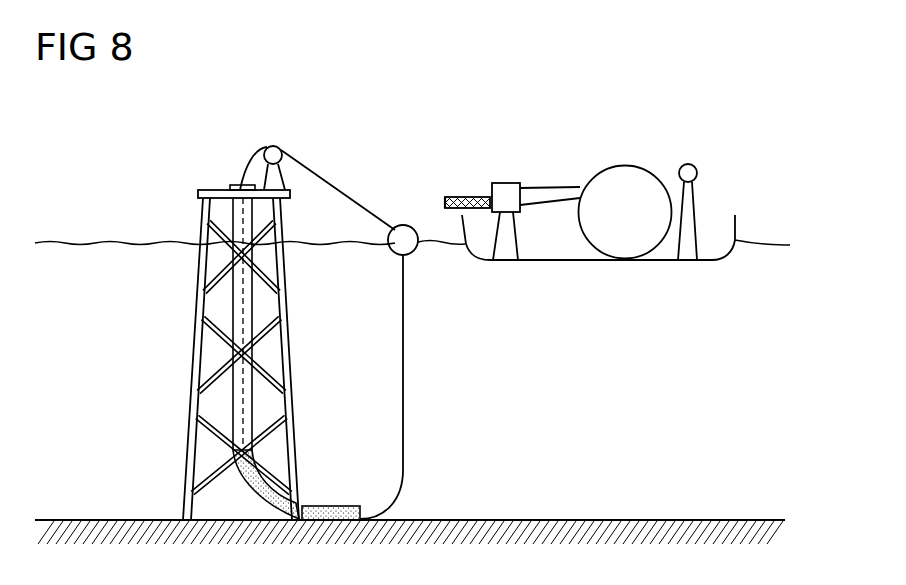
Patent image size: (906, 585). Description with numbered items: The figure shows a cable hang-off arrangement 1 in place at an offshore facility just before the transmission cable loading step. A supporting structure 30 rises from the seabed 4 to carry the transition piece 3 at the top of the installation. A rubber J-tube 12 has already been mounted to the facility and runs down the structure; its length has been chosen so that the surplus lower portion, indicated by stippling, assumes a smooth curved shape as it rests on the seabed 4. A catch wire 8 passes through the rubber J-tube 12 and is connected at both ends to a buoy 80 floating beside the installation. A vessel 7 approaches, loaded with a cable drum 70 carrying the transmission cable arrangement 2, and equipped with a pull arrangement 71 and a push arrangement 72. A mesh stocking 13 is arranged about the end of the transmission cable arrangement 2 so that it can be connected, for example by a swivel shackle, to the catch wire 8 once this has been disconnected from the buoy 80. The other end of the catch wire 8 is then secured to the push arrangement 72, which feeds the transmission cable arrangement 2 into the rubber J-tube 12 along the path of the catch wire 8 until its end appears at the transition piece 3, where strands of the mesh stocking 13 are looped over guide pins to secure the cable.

The offshore installation 1 is at (232, 157).
The transition piece 3 is at (225, 192).
The catch wire 8 is at (340, 170).
The support tower 30 is at (197, 343).
The rubber J-tube 12 is at (332, 507).
The buoy 80 is at (392, 228).
The seabed 4 is at (118, 520).
The vessel 7 is at (737, 228).
The cable drum 70 is at (597, 223).
The pull arrangement 71 is at (690, 173).
The push arrangement 72 is at (507, 192).
The transmission cable arrangement 2 is at (463, 197).
The mesh stocking 13 is at (447, 202).